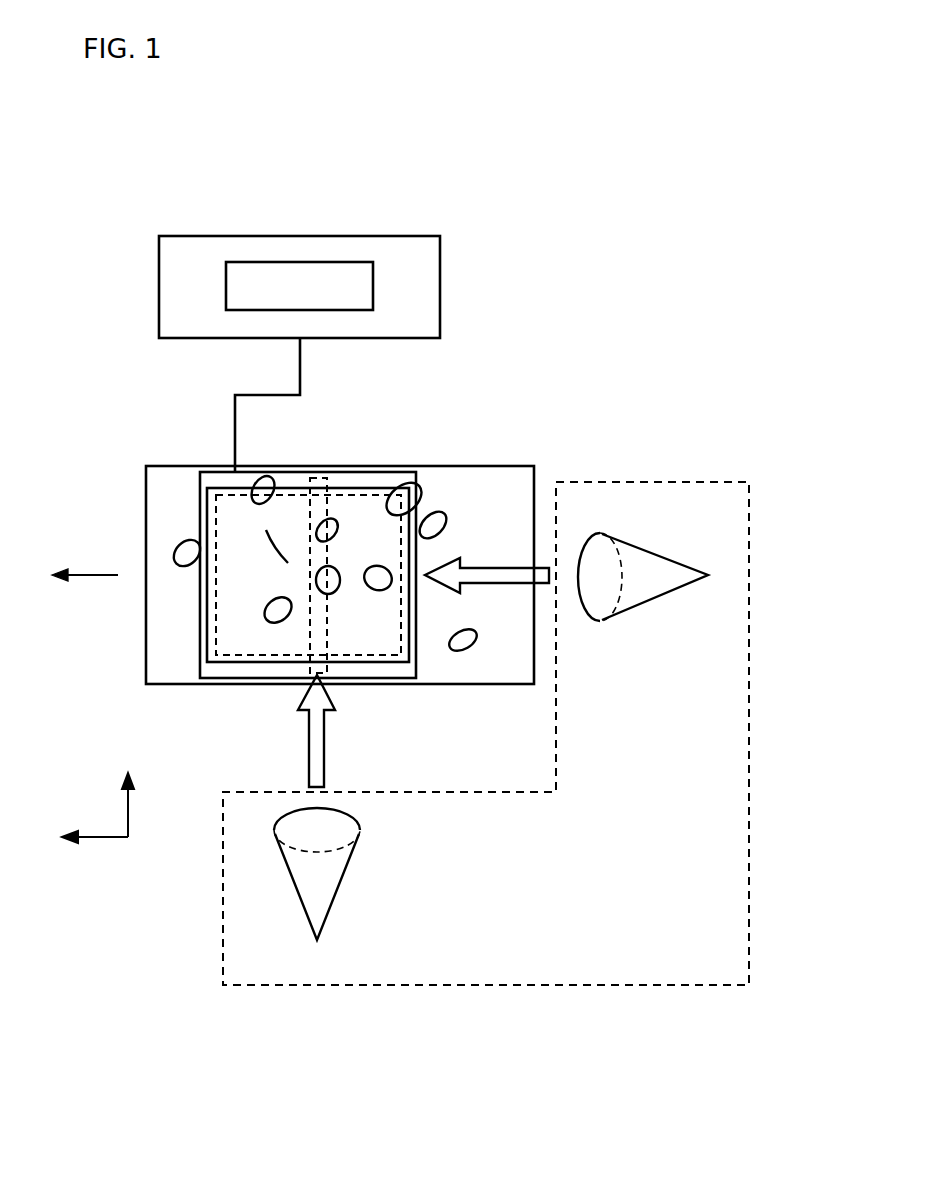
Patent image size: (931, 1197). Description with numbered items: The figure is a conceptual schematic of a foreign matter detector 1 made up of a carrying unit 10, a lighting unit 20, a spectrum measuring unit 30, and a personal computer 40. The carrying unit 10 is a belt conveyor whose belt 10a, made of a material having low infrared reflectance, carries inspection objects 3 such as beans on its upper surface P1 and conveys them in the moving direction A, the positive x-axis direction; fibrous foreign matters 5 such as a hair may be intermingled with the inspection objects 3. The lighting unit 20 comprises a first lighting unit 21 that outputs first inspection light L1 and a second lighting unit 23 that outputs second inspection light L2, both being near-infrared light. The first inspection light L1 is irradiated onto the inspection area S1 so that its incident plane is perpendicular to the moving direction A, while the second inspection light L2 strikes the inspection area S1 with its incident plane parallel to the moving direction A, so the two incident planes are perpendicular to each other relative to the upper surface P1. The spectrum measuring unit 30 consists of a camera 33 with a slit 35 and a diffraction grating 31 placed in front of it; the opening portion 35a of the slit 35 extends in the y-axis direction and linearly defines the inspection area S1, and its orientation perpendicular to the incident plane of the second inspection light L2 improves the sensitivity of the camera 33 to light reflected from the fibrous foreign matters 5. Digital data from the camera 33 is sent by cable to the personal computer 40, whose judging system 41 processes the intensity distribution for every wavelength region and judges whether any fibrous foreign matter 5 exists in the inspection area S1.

The foreign matter detector 1 is at (705, 285).
The personal computer 40 is at (440, 278).
The judging system 41 is at (342, 262).
The carrying unit 10 is at (369, 541).
The belt 10a is at (507, 480).
The upper surface P1 is at (163, 480).
The spectrum measuring unit 30 is at (369, 532).
The slit 35 is at (417, 653).
The camera 33 is at (380, 488).
The diffraction grating 31 is at (344, 495).
The opening portion 35a is at (318, 478).
The inspection area S1 is at (312, 473).
The inspection objects 3 is at (305, 585).
The fibrous foreign matters 5 is at (340, 590).
The lighting unit 20 is at (708, 480).
The first lighting unit 21 is at (347, 867).
The second lighting unit 23 is at (648, 603).
The first inspection light L1 is at (308, 735).
The second inspection light L2 is at (496, 565).
The moving direction A is at (85, 564).